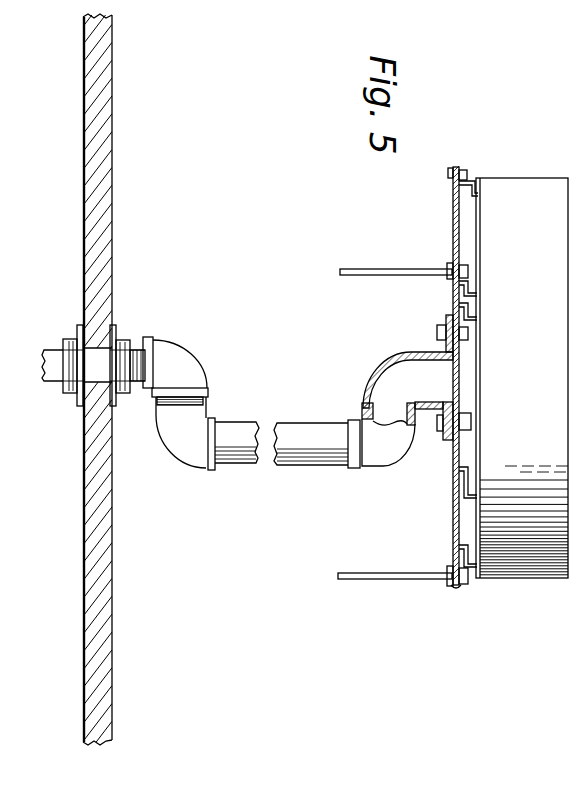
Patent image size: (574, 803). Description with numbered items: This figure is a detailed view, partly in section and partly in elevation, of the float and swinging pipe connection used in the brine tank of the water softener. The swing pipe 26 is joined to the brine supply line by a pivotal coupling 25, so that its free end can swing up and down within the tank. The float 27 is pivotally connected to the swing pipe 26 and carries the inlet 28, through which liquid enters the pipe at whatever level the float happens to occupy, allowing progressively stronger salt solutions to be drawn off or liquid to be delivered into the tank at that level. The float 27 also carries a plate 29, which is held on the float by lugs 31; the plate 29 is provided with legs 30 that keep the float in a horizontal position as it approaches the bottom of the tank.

The pivotal coupling 25 is at (190, 365).
The swing pipe 26 is at (243, 463).
The float 27 is at (527, 582).
The inlet 28 is at (365, 408).
The plate 29 is at (458, 538).
The legs 30 is at (428, 575).
The lugs 31 is at (470, 275).